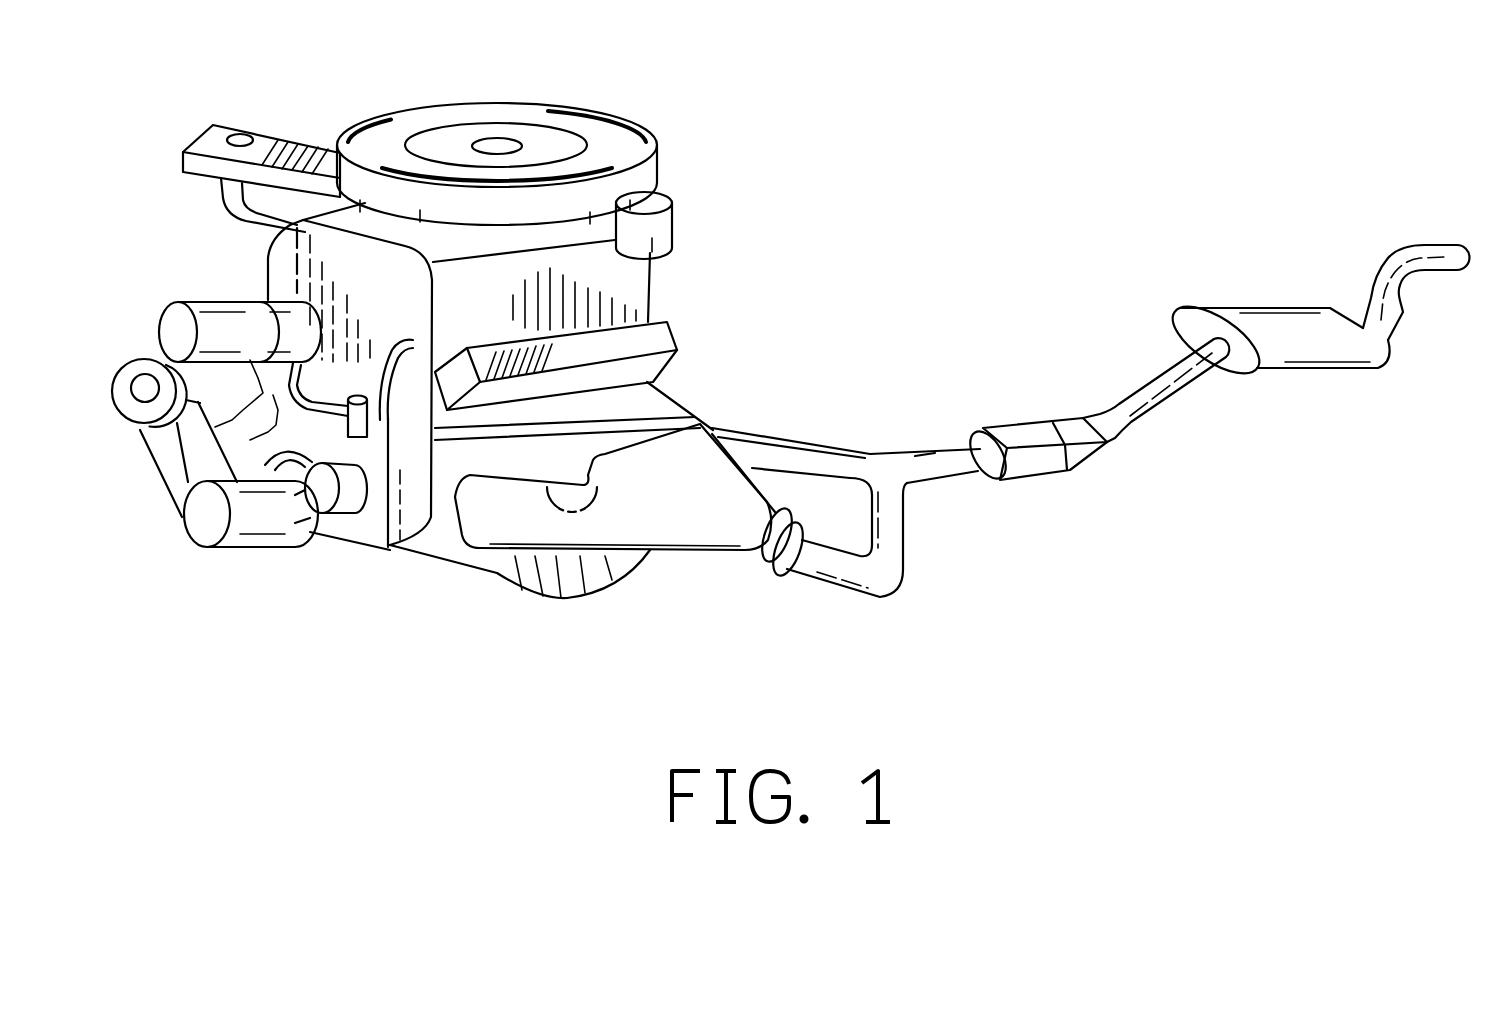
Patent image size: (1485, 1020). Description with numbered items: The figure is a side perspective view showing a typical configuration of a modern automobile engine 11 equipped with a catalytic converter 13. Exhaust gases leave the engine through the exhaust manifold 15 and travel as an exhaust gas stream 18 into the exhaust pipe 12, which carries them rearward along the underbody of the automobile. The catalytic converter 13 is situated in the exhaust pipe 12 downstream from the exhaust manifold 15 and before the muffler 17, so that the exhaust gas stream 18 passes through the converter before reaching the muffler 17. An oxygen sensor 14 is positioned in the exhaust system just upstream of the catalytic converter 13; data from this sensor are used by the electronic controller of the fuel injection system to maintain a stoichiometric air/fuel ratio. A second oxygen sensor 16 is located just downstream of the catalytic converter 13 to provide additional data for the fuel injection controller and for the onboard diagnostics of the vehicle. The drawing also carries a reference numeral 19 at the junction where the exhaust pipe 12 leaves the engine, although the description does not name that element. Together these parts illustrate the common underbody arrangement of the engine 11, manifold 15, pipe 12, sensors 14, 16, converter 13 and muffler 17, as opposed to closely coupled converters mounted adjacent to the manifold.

The automobile engine 11 is at (390, 297).
The exhaust pipe 12 is at (880, 473).
The catalytic converter 13 is at (1037, 460).
The oxygen sensor 14 is at (947, 463).
The exhaust manifold 15 is at (693, 509).
The second oxygen sensor 16 is at (1164, 388).
The muffler 17 is at (1277, 333).
The exhaust gas stream 18 is at (793, 458).
The joint 19 is at (925, 456).